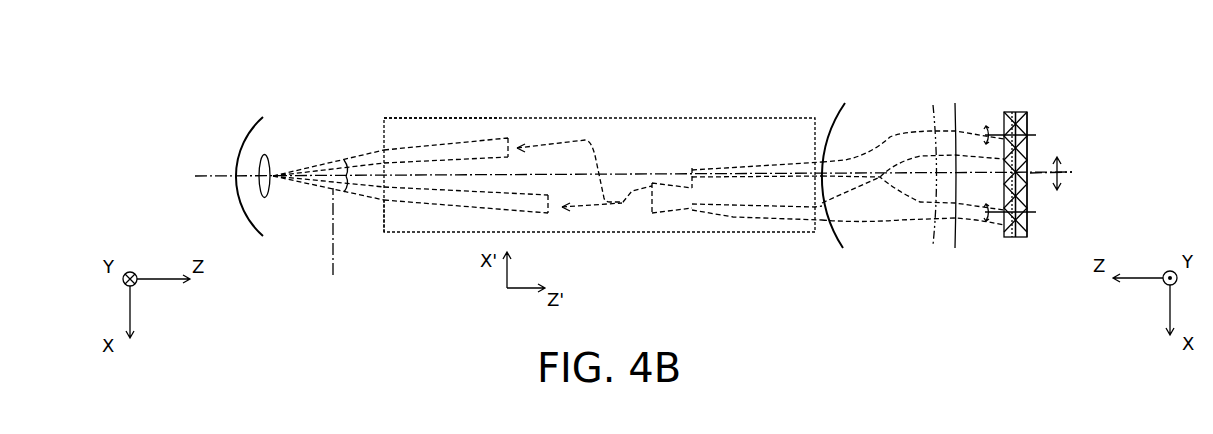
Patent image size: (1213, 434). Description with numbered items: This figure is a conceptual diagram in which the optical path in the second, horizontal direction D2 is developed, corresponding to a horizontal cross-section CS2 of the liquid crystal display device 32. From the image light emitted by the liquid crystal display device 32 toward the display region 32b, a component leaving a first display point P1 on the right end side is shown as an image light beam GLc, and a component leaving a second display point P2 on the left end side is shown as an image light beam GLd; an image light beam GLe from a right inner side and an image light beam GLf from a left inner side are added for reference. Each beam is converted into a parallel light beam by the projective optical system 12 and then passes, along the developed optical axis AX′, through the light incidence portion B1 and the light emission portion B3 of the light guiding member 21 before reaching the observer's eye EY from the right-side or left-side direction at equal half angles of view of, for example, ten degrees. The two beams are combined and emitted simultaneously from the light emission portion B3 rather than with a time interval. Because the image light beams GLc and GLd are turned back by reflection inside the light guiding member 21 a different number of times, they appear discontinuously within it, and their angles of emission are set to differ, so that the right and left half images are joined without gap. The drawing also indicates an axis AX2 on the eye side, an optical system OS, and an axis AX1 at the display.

The observer's eye EY is at (262, 135).
The image light beam GLd is at (308, 162).
The image light beam GLc is at (300, 185).
The optical axis at eye AX2 is at (333, 243).
The optical system OS is at (382, 230).
The light guiding member 21 is at (687, 118).
The light emission portion B3 is at (401, 118).
The light incidence portion B1 is at (797, 118).
The developed optical axis AX′ is at (617, 172).
The projective optical system 12 is at (895, 87).
The image light beam GLf is at (934, 106).
The image light beam GLe is at (934, 246).
The liquid crystal display device 32 is at (1025, 112).
The horizontal cross-section CS2 is at (1015, 112).
The display region 32b is at (1028, 118).
The second display point P2 is at (1024, 140).
The first display point P1 is at (1022, 215).
The second direction D2 is at (1060, 170).
The optical axis at display AX1 is at (1067, 180).